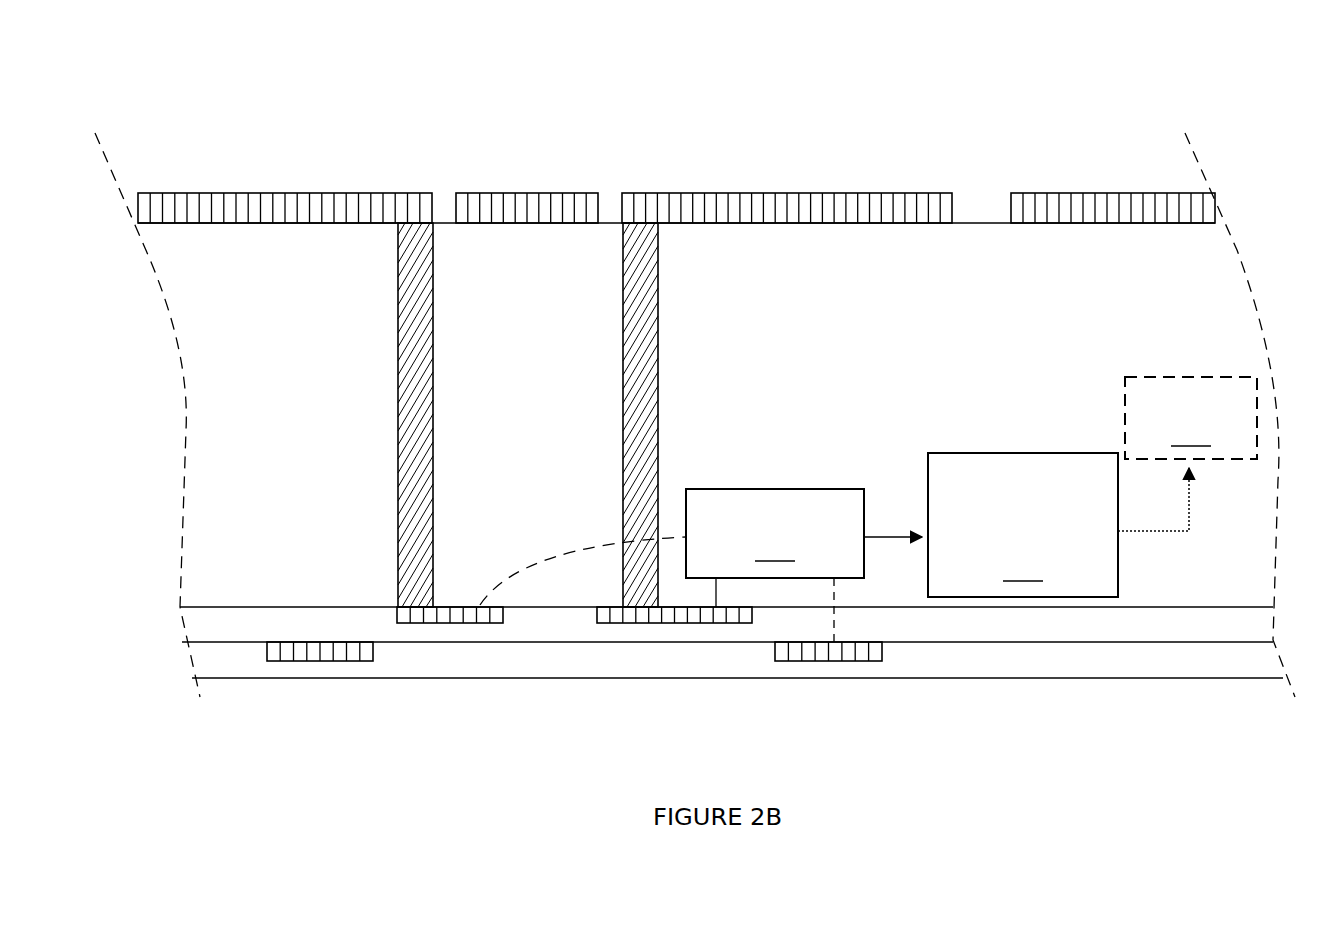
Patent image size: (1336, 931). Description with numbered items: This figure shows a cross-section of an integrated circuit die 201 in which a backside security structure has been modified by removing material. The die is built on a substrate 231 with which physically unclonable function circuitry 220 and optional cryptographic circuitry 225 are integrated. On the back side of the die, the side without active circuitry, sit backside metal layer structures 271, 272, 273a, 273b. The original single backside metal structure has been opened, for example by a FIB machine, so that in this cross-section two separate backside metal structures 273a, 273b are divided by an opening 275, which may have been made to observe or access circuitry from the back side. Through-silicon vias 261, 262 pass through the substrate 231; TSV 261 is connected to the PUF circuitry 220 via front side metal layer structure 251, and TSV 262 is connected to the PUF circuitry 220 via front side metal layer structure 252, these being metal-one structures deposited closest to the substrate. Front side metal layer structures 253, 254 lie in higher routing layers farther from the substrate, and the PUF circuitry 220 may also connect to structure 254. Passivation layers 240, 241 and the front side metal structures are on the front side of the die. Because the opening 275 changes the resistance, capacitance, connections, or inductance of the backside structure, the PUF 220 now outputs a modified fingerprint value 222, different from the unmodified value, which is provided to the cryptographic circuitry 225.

The integrated circuit die 201 is at (1232, 72).
The substrate 231 is at (263, 403).
The backside metal layer structure 271 is at (268, 204).
The backside metal layer structure 272 is at (485, 210).
The backside metal structure 273a is at (745, 203).
The backside metal structure 273b is at (1070, 203).
The opening 275 is at (962, 180).
The through-silicon via 261 is at (405, 360).
The through-silicon via 262 is at (653, 338).
The front side metal layer structure 251 is at (443, 620).
The front side metal layer structure 252 is at (662, 620).
The front side metal layer structure 253 is at (313, 652).
The front side metal layer structure 254 is at (845, 650).
The passivation layer 240 is at (210, 628).
The passivation layer 241 is at (245, 668).
The physically unclonable function circuitry 220 is at (701, 565).
The modified fingerprint value 222 is at (1058, 525).
The cryptographic circuitry 225 is at (1191, 418).